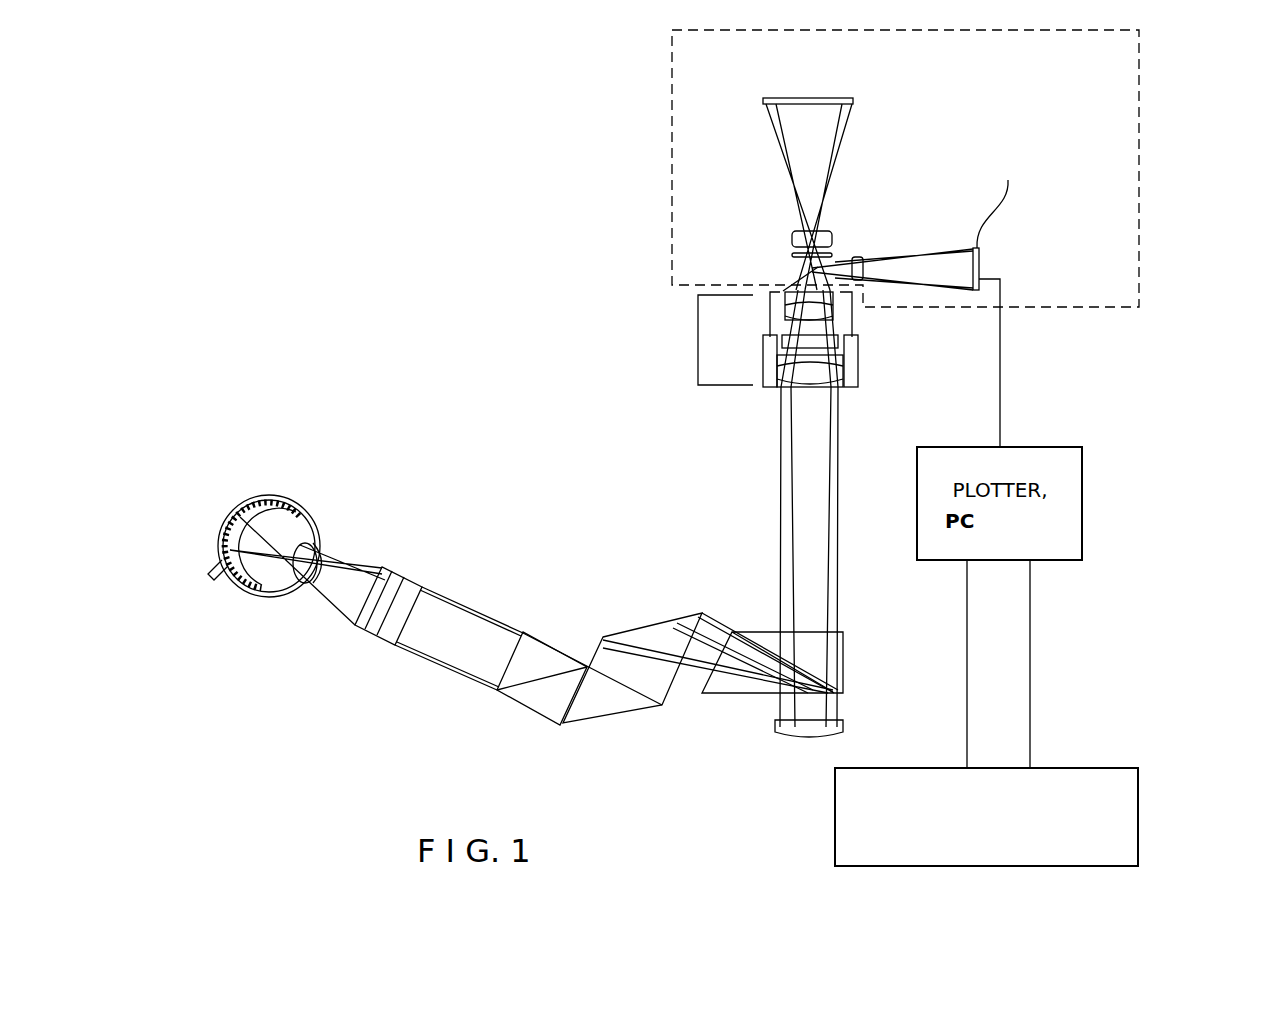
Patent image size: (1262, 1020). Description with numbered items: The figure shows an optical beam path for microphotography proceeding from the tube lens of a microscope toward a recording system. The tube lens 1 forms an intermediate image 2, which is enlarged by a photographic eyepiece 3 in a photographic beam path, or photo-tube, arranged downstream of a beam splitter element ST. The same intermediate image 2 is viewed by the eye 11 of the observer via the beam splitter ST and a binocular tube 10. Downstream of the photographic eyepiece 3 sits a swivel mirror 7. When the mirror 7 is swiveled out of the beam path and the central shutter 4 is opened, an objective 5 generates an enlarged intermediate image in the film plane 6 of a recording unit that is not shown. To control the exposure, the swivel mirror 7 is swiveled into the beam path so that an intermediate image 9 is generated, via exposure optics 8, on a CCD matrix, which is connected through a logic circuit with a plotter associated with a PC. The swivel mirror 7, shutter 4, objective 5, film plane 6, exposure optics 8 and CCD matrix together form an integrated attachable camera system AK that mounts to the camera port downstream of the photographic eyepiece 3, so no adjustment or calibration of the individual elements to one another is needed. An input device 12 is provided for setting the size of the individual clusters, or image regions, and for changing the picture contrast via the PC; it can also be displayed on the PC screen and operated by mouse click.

The tube lens 1 is at (772, 728).
The intermediate image 2 is at (498, 563).
The photographic eyepiece 3 is at (408, 560).
The central shutter 4 is at (792, 255).
The objective 5 is at (325, 525).
The film plane 6 is at (262, 482).
The swivel mirror 7 is at (783, 291).
The exposure optics 8 is at (858, 262).
The intermediate image 9 is at (994, 265).
The binocular tube 10 is at (373, 645).
The eye 11 is at (242, 602).
The input device 12 is at (1075, 768).
The beam splitter element ST is at (845, 660).
The attachable camera system AK is at (1142, 127).